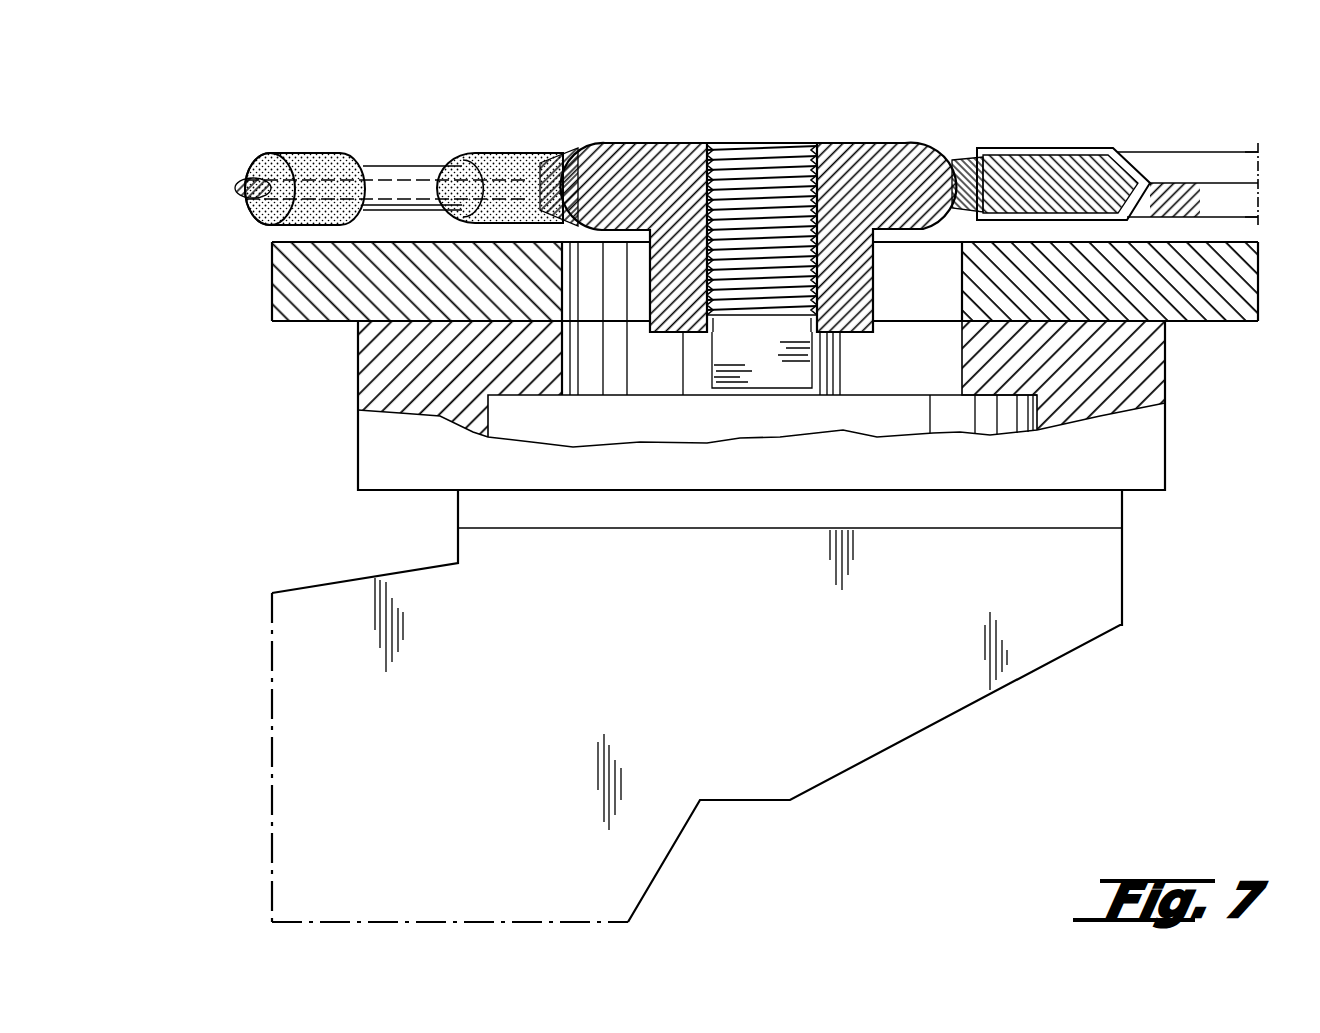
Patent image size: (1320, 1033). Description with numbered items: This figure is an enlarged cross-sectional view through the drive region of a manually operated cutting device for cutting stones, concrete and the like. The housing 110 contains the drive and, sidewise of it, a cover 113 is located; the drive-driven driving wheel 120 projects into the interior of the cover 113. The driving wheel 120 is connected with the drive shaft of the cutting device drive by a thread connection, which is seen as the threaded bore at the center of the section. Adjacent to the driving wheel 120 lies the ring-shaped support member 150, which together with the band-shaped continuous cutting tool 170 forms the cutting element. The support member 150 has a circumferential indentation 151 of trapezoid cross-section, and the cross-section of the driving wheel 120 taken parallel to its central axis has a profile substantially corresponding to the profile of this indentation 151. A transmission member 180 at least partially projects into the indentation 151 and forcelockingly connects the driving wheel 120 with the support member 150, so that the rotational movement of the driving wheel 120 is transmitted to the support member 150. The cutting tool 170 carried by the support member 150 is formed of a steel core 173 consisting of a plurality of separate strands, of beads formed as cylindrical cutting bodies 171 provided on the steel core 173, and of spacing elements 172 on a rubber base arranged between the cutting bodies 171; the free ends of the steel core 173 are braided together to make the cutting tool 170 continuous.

The housing 110 is at (1052, 661).
The cover 113 is at (1208, 302).
The driving wheel 120 is at (868, 150).
The support member 150 is at (1143, 153).
The circumferential indentation 151 is at (960, 160).
The cutting tool 170 is at (477, 152).
The cutting bodies 171 is at (308, 152).
The spacing elements 172 is at (388, 165).
The steel core 173 is at (253, 153).
The transmission member 180 is at (560, 148).